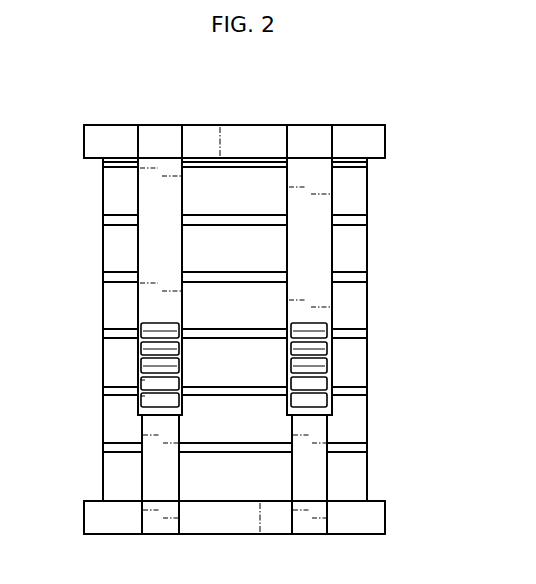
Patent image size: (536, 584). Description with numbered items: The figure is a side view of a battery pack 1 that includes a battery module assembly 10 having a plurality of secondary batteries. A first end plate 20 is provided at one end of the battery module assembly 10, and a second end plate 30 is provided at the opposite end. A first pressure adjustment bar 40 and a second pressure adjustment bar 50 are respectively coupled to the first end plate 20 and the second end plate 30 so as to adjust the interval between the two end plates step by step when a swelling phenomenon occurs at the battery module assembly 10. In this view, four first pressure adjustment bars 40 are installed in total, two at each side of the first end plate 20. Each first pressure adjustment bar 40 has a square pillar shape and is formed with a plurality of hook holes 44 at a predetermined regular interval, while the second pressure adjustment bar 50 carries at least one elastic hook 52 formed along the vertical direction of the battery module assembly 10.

The battery pack 1 is at (98, 88).
The battery module assembly 10 is at (390, 295).
The first end plate 20 is at (362, 132).
The second end plate 30 is at (353, 530).
The first pressure adjustment bar 40 is at (148, 251).
The hook holes 44 is at (142, 391).
The second pressure adjustment bar 50 is at (162, 530).
The elastic hook 52 is at (146, 363).